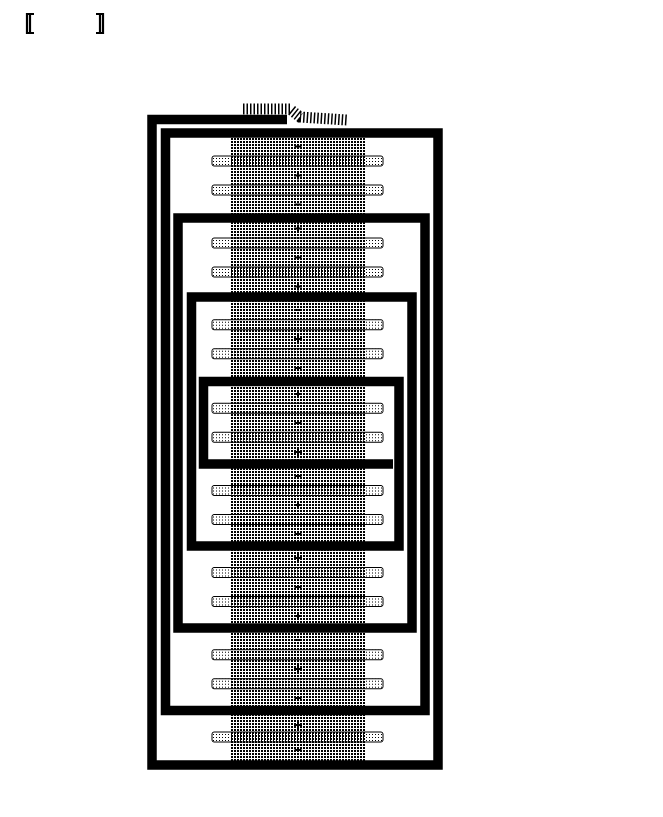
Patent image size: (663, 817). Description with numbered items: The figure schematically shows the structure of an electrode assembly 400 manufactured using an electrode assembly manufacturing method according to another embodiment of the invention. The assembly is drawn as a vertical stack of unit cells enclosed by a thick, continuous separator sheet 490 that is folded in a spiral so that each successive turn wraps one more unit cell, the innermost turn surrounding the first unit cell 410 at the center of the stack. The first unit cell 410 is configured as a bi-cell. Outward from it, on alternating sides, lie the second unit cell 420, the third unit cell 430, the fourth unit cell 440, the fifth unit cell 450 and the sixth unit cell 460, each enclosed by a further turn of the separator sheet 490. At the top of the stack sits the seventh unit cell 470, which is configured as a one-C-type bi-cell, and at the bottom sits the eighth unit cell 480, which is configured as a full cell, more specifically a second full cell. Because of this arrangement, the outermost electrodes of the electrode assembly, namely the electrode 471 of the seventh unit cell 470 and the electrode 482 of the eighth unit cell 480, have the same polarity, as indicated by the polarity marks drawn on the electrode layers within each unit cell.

The electrode assembly 400 is at (95, 128).
The first unit cell 410 is at (366, 423).
The second unit cell 420 is at (366, 505).
The third unit cell 430 is at (366, 339).
The fourth unit cell 440 is at (366, 587).
The fifth unit cell 450 is at (366, 258).
The sixth unit cell 460 is at (366, 669).
The seventh unit cell 470 is at (366, 176).
The electrode 471 is at (230, 146).
The eighth unit cell 480 is at (380, 752).
The electrode 482 is at (232, 752).
The separator sheet 490 is at (148, 412).